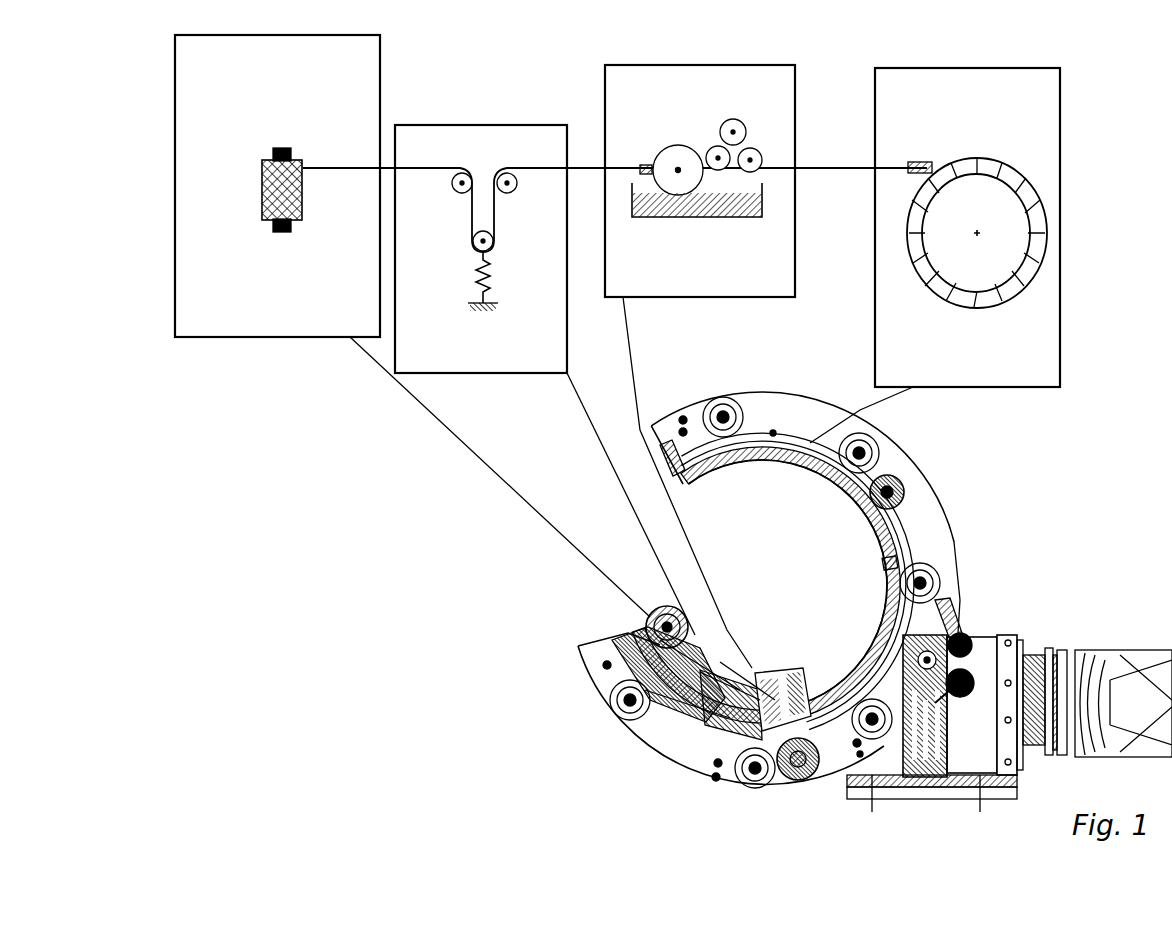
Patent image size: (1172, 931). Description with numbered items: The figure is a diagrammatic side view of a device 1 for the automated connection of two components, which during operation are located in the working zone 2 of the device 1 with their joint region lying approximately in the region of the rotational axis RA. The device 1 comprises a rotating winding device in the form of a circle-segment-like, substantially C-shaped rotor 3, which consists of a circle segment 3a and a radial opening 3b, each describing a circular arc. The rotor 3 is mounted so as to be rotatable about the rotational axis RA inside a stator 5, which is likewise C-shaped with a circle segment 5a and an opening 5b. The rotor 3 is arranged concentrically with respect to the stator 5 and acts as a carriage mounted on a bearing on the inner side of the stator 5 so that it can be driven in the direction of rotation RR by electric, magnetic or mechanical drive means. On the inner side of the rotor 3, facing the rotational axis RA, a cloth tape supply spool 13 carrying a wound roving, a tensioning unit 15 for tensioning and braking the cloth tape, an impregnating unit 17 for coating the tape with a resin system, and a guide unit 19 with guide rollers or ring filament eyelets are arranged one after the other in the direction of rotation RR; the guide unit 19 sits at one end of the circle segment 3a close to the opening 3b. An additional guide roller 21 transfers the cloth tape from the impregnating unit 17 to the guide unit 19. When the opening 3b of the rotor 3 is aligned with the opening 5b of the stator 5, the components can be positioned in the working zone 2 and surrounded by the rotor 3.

The device 1 is at (1016, 548).
The working zone 2 is at (795, 634).
The rotor 3 is at (890, 745).
The circle segment 3a is at (899, 468).
The radial opening 3b is at (620, 538).
The stator 5 is at (938, 504).
The circle segment 5a is at (935, 563).
The opening 5b is at (660, 452).
The cloth tape supply spool 13 is at (262, 218).
The tensioning unit 15 is at (486, 140).
The impregnating unit 17 is at (728, 48).
The guide unit 19 is at (1034, 150).
The guide roller 21 is at (905, 545).
The direction of rotation RR is at (733, 576).
The rotational axis RA is at (762, 586).